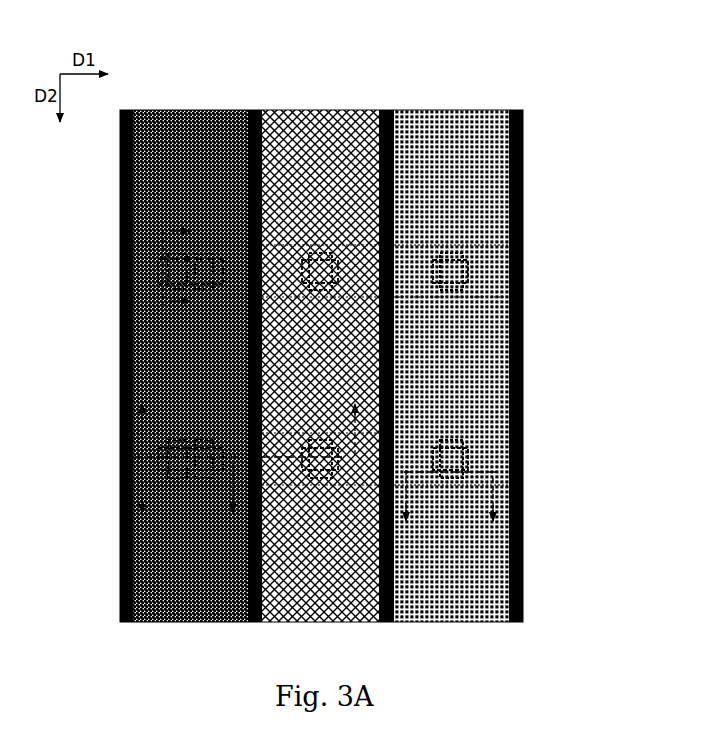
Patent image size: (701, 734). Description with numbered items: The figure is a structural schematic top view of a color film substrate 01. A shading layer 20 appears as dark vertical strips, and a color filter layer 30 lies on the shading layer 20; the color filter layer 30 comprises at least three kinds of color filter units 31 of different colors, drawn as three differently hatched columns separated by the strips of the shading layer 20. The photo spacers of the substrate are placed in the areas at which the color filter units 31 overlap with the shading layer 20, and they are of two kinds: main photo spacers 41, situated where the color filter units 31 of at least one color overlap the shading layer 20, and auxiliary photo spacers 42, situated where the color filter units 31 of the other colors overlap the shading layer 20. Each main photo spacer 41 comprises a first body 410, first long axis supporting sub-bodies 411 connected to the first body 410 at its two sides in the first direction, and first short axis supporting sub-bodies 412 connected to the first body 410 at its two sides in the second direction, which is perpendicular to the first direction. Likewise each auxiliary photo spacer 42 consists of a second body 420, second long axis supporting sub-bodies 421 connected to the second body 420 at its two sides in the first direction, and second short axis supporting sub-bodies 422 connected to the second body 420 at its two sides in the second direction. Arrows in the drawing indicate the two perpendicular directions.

The color film substrate 01 is at (170, 73).
The color filter layer 30 is at (467, 73).
The color filter units 31 is at (172, 133).
The shading layer 20 is at (522, 357).
The main photo spacers 41 is at (45, 248).
The first body 410 is at (190, 268).
The first long axis supporting sub-bodies 411 is at (168, 282).
The first short axis supporting sub-bodies 412 is at (165, 297).
The auxiliary photo spacers 42 is at (600, 226).
The second body 420 is at (465, 297).
The second long axis supporting sub-bodies 421 is at (465, 263).
The second short axis supporting sub-bodies 422 is at (465, 247).